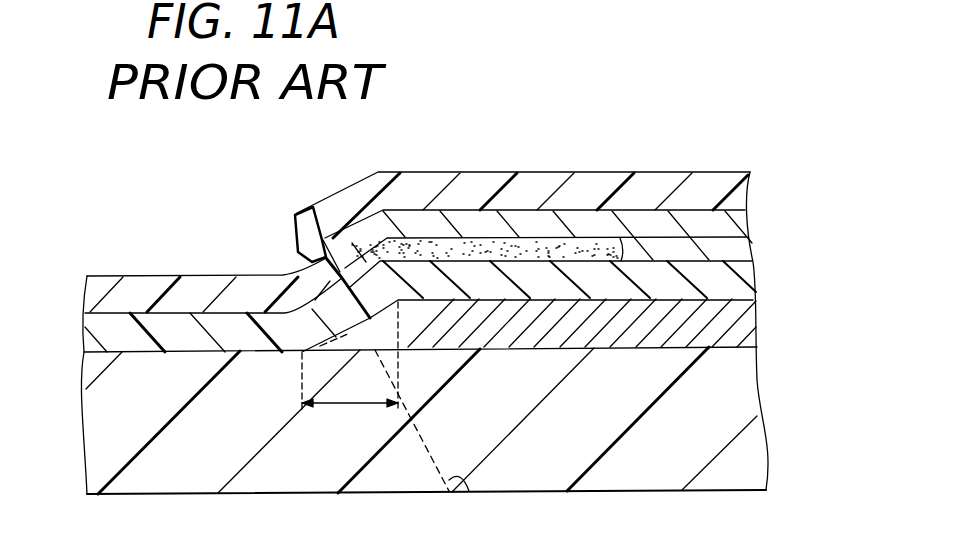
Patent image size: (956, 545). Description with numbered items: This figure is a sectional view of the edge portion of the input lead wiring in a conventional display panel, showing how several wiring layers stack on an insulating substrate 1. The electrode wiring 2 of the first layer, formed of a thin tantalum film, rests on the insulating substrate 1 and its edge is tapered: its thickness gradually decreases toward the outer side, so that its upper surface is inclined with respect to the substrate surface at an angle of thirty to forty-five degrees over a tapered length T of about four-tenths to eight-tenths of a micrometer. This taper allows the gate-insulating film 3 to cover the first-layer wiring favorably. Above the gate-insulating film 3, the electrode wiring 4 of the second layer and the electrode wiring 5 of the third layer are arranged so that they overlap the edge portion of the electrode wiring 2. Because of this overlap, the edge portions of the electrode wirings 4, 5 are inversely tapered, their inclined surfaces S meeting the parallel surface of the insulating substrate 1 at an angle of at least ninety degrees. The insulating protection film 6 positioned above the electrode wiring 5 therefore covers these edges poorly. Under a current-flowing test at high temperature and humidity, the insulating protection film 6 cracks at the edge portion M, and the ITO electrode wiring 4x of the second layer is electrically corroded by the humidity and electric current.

The insulating substrate 1 is at (757, 415).
The electrode wiring of the first layer 2 is at (476, 348).
The gate-insulating film 3 is at (219, 332).
The electrode wiring of the second layer 4 is at (670, 243).
The electrode wiring of the second layer (ITO electrode wiring) 4x is at (590, 245).
The electrode wiring of the third layer 5 is at (510, 218).
The insulating protection film 6 is at (127, 297).
The inclined surfaces S is at (315, 240).
The edge portion M is at (282, 258).
The tapered length T is at (350, 356).